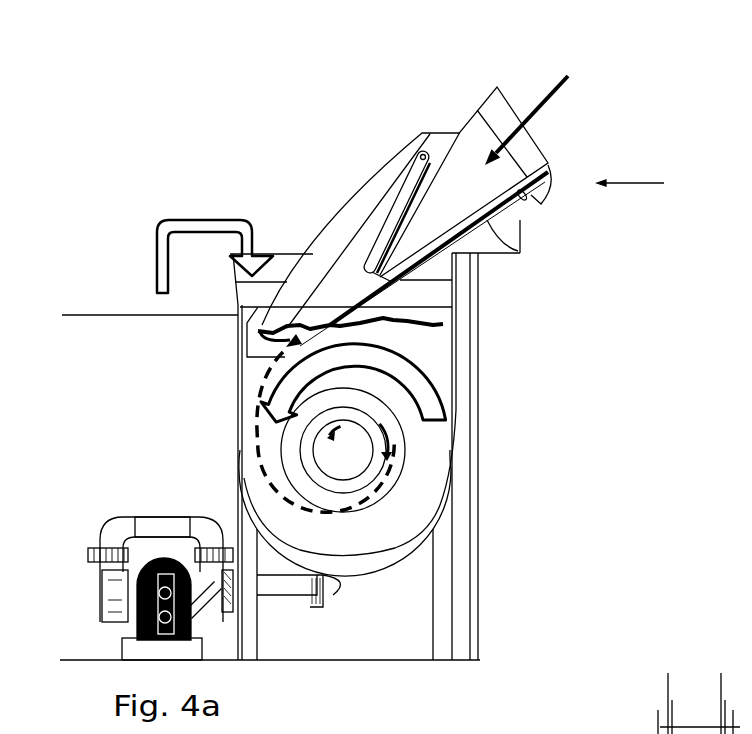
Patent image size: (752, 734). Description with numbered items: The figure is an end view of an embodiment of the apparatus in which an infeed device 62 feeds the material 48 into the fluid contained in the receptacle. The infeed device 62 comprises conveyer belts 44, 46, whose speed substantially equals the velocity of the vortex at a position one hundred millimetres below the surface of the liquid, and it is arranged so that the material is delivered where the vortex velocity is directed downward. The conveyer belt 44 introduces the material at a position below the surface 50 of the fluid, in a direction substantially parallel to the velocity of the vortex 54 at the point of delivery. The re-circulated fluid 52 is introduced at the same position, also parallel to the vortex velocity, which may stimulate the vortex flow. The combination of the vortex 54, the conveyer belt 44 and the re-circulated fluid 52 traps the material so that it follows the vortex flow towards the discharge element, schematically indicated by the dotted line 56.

The conveyer belt 44 is at (520, 253).
The conveyer belt 46 is at (390, 202).
The material 48 is at (480, 136).
The surface of the fluid 50 is at (425, 325).
The re-circulated fluid 52 is at (205, 207).
The vortex 54 is at (443, 412).
The dotted line 56 is at (375, 506).
The infeed device 62 is at (653, 187).